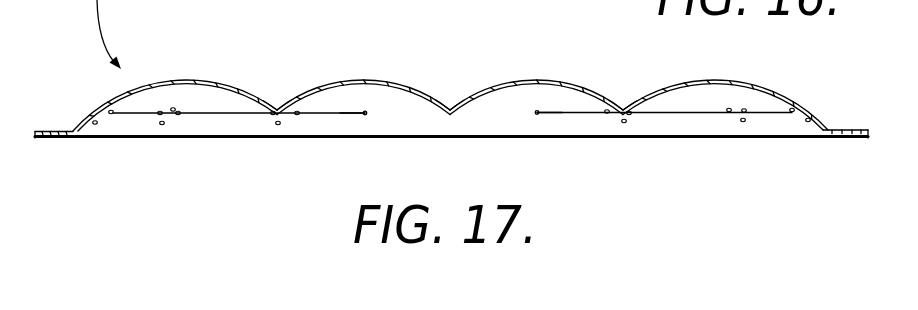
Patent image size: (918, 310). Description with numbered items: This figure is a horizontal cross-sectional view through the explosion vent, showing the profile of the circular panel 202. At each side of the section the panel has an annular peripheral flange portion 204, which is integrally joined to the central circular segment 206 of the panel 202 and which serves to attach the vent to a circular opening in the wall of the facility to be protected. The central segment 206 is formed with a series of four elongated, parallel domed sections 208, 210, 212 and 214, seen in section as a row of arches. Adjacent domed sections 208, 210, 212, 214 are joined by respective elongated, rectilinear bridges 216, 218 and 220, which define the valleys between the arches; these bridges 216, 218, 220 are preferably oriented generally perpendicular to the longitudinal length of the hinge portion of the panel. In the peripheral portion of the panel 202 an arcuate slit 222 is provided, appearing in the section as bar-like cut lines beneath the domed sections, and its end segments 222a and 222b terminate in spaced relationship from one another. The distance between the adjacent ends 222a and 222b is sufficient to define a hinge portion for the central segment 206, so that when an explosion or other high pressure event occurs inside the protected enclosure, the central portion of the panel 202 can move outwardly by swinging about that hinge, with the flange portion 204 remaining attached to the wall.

The circular panel 202 is at (74, 113).
The annular peripheral flange portion 204 is at (845, 138).
The central circular segment 206 is at (773, 88).
The domed section 208 is at (183, 80).
The domed section 210 is at (368, 80).
The domed section 212 is at (537, 80).
The domed section 214 is at (722, 80).
The rectilinear bridge 216 is at (277, 109).
The rectilinear bridge 218 is at (448, 104).
The rectilinear bridge 220 is at (622, 109).
The arcuate slit 222 is at (212, 114).
The end segment of arcuate slit 222a is at (367, 114).
The end segment of arcuate slit 222b is at (537, 114).